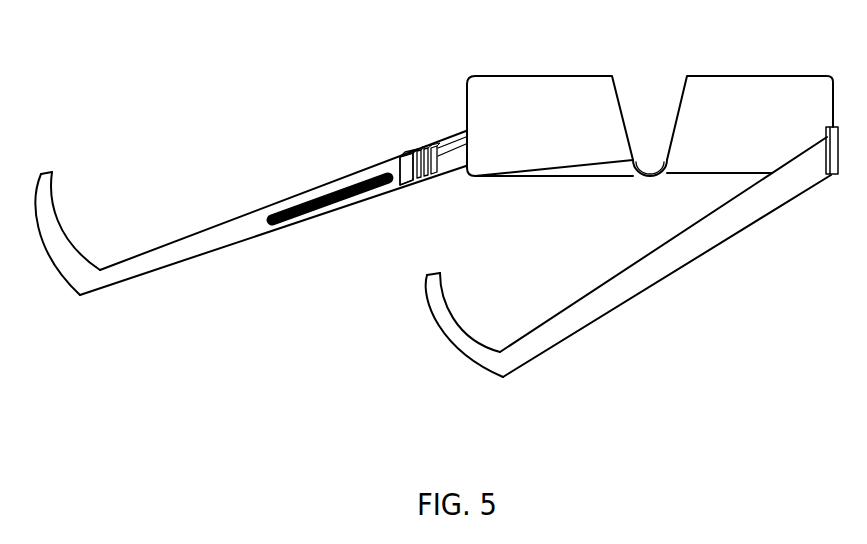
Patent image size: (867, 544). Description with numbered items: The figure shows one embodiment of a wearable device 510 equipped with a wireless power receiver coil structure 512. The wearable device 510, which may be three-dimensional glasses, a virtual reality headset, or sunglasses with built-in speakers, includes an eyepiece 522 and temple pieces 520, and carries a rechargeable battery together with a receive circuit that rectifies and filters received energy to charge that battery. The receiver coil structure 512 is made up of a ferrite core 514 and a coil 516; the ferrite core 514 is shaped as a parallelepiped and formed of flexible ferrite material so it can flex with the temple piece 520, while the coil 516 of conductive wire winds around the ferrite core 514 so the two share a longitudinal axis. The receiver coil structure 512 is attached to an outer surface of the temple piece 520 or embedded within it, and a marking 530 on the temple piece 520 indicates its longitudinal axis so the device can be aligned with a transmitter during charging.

The wearable device 510 is at (436, 237).
The receiver coil structure 512 is at (428, 198).
The ferrite core 514 is at (397, 156).
The coil 516 is at (423, 147).
The temple pieces 520 is at (208, 230).
The eyepiece 522 is at (568, 76).
The sensor window 530 is at (320, 212).